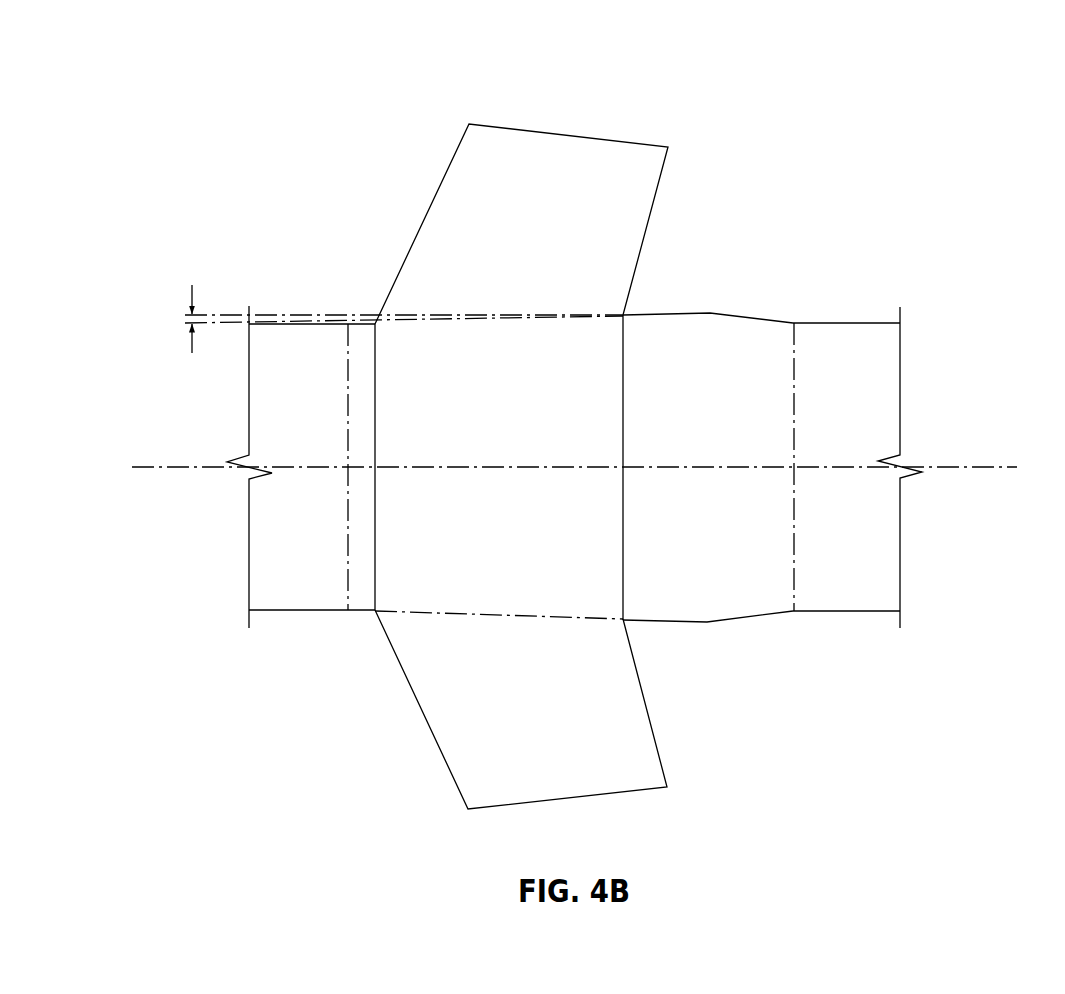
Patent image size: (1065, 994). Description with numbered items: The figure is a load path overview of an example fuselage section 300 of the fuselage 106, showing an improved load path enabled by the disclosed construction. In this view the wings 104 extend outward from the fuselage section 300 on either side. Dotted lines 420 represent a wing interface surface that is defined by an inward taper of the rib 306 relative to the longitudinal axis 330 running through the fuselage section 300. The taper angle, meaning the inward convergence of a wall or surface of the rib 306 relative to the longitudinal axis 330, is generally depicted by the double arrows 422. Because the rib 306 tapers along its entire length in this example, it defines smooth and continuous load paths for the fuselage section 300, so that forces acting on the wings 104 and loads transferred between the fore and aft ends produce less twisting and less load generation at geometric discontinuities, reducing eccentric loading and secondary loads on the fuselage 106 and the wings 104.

The fuselage 106 is at (946, 76).
The fuselage section 300 is at (871, 173).
The longitudinal axis 330 is at (555, 468).
The wings 104 is at (457, 213).
The dotted lines 420 is at (463, 318).
The rib 306 is at (422, 320).
The double arrows 422 is at (193, 293).